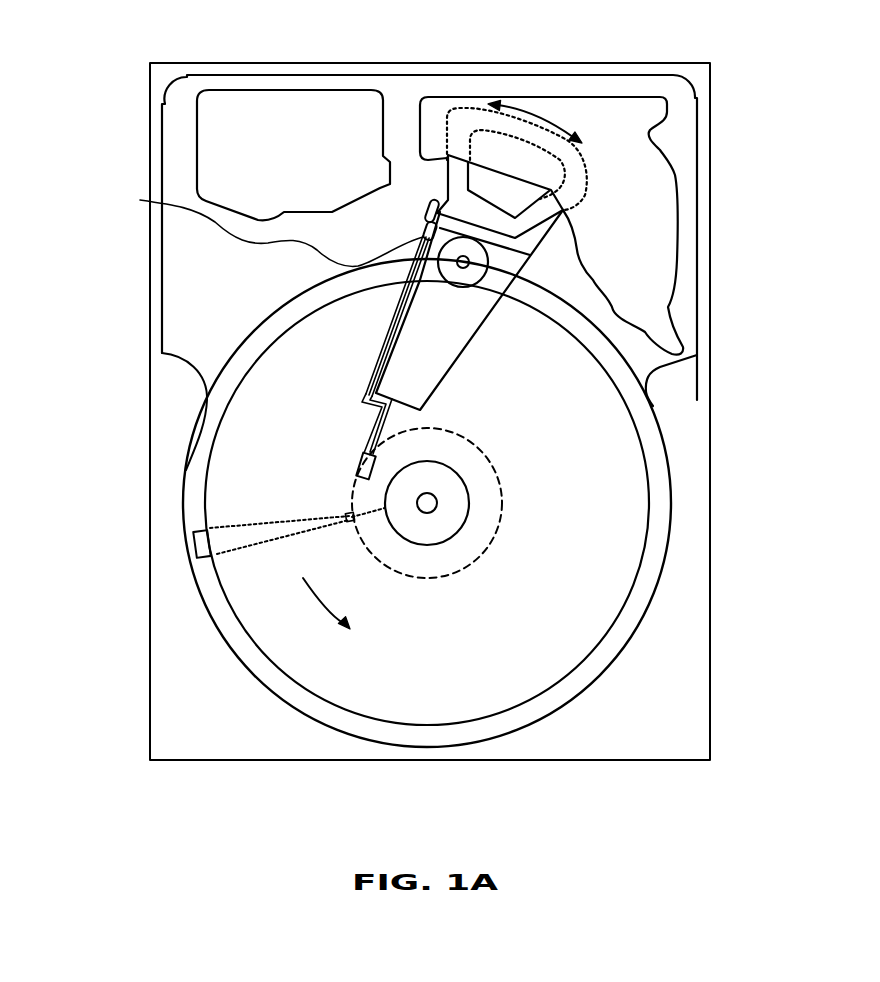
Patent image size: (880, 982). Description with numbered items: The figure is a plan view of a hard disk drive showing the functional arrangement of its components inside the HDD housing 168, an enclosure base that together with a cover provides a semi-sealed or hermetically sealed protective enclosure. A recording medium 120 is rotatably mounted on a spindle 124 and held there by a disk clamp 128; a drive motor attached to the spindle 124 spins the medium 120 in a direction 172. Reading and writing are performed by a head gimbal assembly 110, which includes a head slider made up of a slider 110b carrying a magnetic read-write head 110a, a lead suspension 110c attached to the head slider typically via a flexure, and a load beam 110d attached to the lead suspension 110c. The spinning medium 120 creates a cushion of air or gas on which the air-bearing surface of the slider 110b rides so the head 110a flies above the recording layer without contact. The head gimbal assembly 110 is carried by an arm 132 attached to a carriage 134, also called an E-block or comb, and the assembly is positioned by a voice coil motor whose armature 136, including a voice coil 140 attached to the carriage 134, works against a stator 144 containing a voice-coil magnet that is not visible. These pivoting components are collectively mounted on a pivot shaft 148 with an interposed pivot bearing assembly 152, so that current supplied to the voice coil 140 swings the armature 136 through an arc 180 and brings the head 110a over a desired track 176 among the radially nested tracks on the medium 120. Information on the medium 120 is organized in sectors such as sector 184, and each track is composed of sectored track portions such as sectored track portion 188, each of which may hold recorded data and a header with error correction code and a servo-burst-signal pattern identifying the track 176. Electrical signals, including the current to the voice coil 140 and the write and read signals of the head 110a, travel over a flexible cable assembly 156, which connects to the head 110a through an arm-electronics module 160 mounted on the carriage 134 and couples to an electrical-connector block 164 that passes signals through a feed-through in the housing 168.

The head gimbal assembly 110 is at (87, 333).
The magnetic read-write head 110a is at (366, 474).
The slider 110b is at (363, 455).
The lead suspension 110c is at (380, 422).
The load beam 110d is at (364, 392).
The recording medium 120 is at (590, 460).
The spindle 124 is at (437, 503).
The disk clamp 128 is at (452, 518).
The arm 132 is at (420, 362).
The carriage 134 is at (482, 290).
The armature 136 is at (446, 160).
The voice coil 140 is at (460, 168).
The stator 144 is at (650, 178).
The pivot shaft 148 is at (469, 262).
The pivot bearing assembly 152 is at (476, 274).
The flexible cable assembly 156 is at (255, 328).
The arm-electronics module 160 is at (424, 238).
The electrical-connector block 164 is at (216, 152).
The HDD housing 168 is at (692, 77).
The direction 172 is at (340, 610).
The track 176 is at (494, 470).
The arc 180 is at (540, 112).
The sector 184 is at (196, 543).
The sectored track portion 188 is at (346, 515).